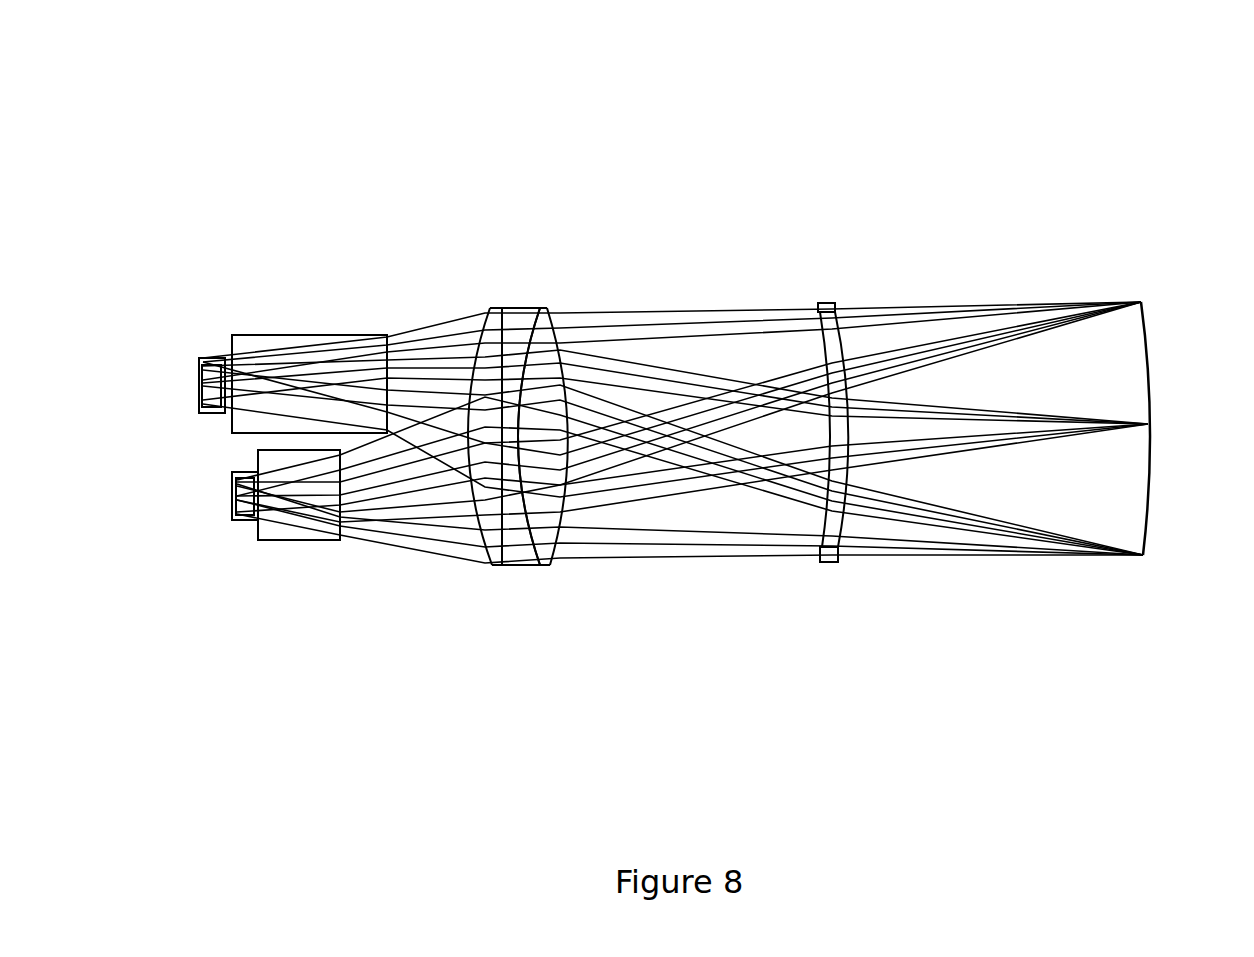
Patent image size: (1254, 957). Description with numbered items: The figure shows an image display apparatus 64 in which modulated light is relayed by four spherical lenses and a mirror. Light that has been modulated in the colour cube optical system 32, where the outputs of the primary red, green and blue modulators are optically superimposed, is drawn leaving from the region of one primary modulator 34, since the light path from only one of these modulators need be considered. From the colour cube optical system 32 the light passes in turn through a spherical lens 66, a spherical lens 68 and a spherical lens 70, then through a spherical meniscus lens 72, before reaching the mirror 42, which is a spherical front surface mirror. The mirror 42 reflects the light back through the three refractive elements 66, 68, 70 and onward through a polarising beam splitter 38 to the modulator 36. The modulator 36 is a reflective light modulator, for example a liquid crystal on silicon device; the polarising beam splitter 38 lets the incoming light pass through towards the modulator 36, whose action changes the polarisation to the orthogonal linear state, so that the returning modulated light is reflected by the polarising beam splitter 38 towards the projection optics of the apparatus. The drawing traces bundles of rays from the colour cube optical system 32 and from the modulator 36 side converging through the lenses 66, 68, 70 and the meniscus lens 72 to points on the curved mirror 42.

The image display apparatus 64 is at (334, 150).
The colour cube optical system 32 is at (317, 334).
The primary modulator 34 is at (199, 378).
The modulator 36 is at (232, 492).
The polarising beam splitter 38 is at (322, 540).
The spherical lens 66 is at (490, 308).
The spherical lens 68 is at (512, 308).
The spherical lens 70 is at (547, 308).
The spherical meniscus lens 72 is at (828, 303).
The mirror 42 is at (1150, 412).